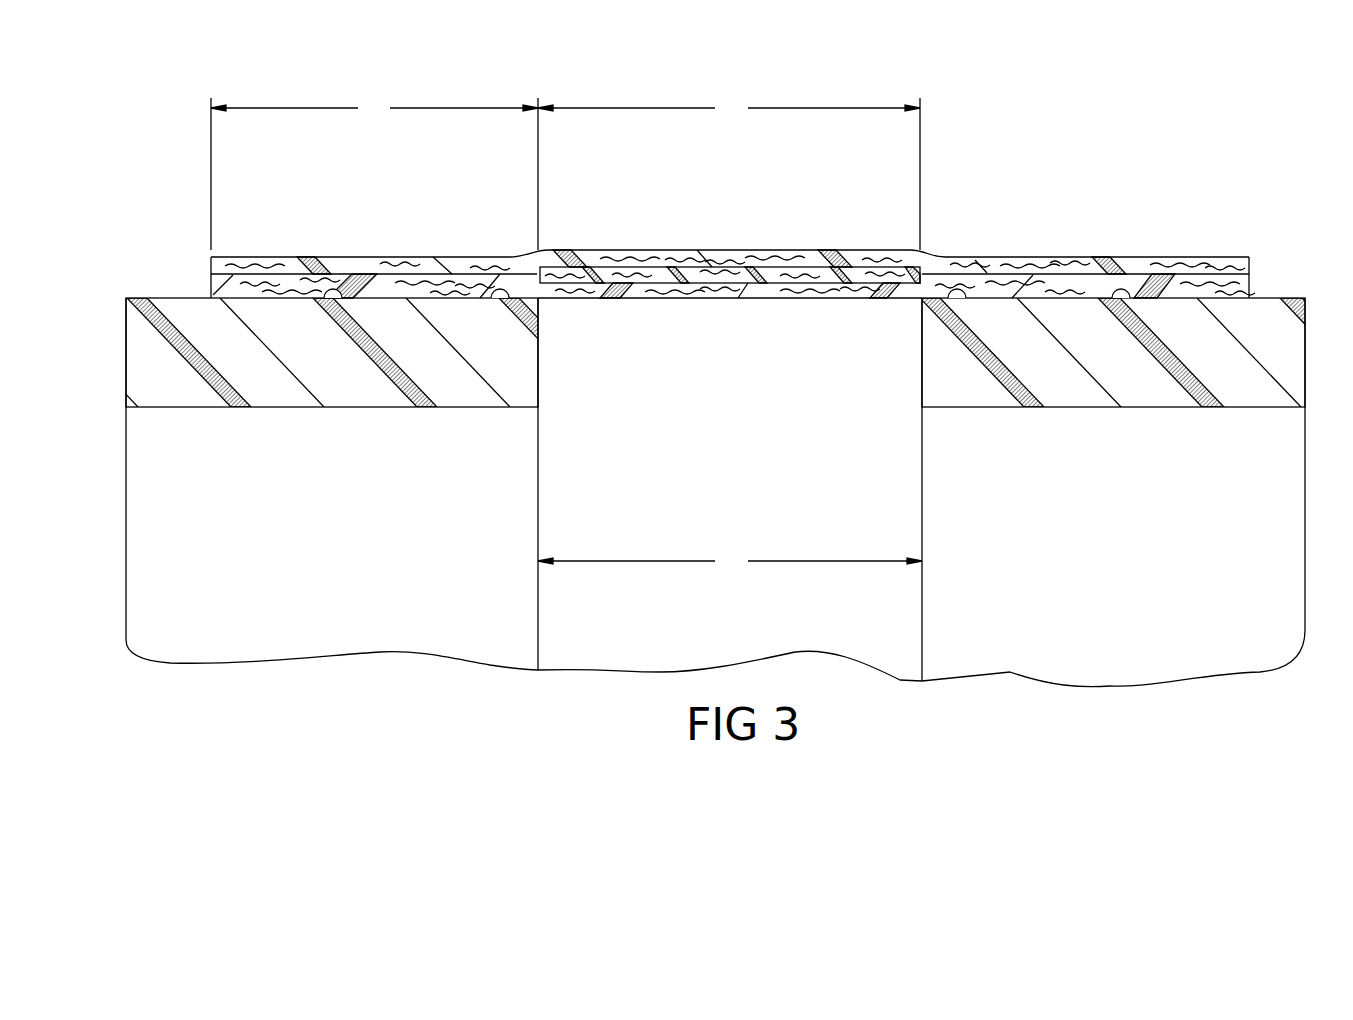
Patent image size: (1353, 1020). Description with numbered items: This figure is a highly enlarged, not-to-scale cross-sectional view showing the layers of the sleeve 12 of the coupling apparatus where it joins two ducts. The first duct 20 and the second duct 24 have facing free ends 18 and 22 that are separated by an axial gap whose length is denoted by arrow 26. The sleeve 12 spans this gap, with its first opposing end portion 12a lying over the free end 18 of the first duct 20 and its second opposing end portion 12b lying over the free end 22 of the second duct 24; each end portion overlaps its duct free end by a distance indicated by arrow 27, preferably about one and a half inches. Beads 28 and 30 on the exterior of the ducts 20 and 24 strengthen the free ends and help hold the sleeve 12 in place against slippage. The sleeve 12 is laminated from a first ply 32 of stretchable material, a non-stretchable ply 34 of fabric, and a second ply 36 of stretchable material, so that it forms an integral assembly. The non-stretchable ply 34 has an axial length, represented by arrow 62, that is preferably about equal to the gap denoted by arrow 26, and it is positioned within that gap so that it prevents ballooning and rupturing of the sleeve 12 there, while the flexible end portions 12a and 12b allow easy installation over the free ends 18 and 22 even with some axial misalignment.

The sleeve 12 is at (733, 263).
The first opposing end portion 12a is at (223, 260).
The second opposing end portion 12b is at (1237, 265).
The free end of first duct 18 is at (499, 395).
The first duct 20 is at (455, 672).
The free end of second duct 22 is at (978, 395).
The second duct 24 is at (994, 690).
The arrow denoting gap 26 is at (730, 562).
The arrow indicating overlap 27 is at (374, 173).
The bead 28 is at (337, 288).
The bead 30 is at (1125, 292).
The first ply 32 is at (757, 284).
The non-stretchable ply 34 is at (778, 275).
The second ply 36 is at (687, 258).
The arrow representing axial length 62 is at (729, 173).